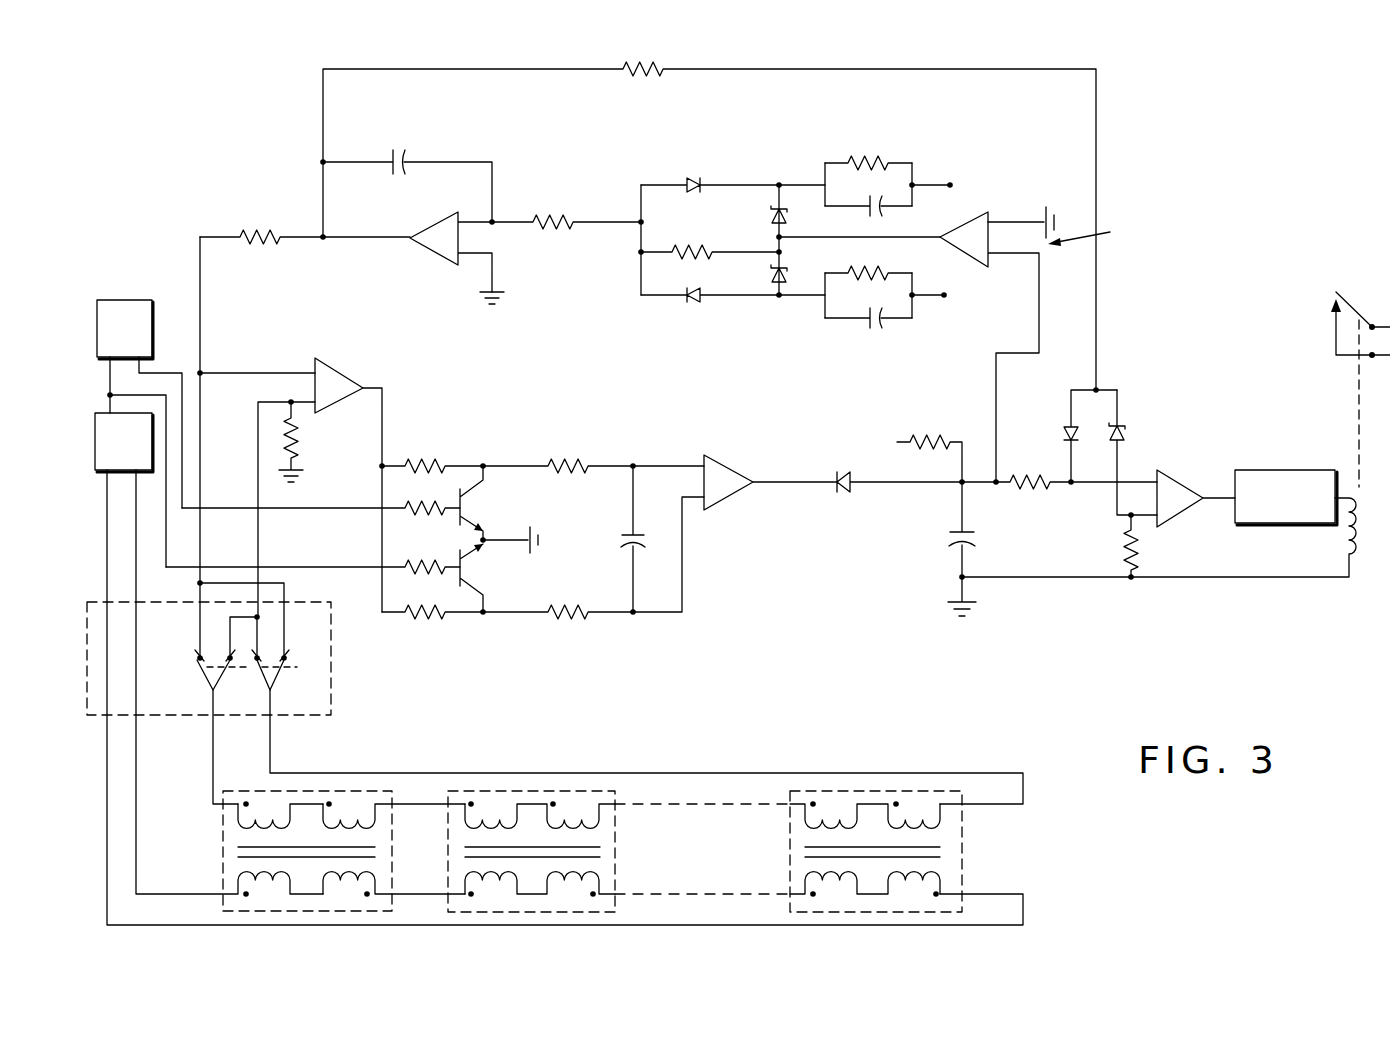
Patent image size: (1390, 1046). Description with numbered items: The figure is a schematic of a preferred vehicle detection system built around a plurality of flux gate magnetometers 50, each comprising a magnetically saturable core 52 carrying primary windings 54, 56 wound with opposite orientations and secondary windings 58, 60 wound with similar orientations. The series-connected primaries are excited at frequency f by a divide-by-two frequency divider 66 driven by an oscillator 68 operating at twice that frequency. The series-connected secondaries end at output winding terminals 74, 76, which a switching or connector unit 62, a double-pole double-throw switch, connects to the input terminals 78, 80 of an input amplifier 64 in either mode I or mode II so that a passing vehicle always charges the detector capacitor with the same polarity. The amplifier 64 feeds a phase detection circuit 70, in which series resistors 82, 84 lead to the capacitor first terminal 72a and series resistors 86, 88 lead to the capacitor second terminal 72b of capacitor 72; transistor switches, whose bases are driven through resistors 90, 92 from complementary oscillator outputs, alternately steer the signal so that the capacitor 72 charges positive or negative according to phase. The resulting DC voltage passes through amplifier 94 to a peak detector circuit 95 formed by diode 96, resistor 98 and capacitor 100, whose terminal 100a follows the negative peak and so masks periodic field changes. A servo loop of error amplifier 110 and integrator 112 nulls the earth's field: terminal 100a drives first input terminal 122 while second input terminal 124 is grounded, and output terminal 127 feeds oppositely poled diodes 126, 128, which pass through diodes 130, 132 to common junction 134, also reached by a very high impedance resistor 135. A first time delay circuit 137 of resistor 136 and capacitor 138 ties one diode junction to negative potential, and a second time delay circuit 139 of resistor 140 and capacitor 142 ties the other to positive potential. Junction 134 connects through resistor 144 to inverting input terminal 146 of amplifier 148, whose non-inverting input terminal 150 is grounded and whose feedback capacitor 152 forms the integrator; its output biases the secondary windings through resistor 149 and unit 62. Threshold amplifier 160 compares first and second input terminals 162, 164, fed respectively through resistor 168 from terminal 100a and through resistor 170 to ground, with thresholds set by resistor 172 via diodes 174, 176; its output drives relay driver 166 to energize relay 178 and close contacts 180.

The flux gate magnetometer 50 is at (976, 847).
The magnetically saturable element 52 is at (378, 852).
The primary winding 54 is at (296, 440).
The primary winding 56 is at (394, 891).
The secondary winding 58 is at (280, 811).
The secondary winding 60 is at (394, 811).
The switching or connector unit 62 is at (331, 690).
The input amplifier 64 is at (336, 406).
The divide by 2 frequency divider 66 is at (96, 472).
The oscillator 68 is at (124, 299).
The phase detection circuit 70 is at (481, 463).
The capacitor 72 is at (641, 533).
The capacitor first terminal 72a is at (637, 462).
The capacitor second terminal 72b is at (637, 617).
The output winding terminal 74 is at (215, 735).
The output winding terminal 76 is at (272, 735).
The input terminal 78 is at (247, 371).
The input terminal 80 is at (256, 420).
The resistor 82 is at (411, 476).
The resistor 84 is at (579, 461).
The resistor 86 is at (438, 623).
The resistor 88 is at (573, 623).
The resistor 90 is at (413, 519).
The resistor 92 is at (435, 562).
The amplifier 94 is at (735, 503).
The peak detector circuit 95 is at (853, 464).
The diode 96 is at (838, 496).
The resistor 98 is at (905, 452).
The capacitor 100 is at (948, 540).
The capacitor terminal 100a is at (959, 488).
The error amplifier 110 is at (941, 229).
The integrator 112 is at (383, 225).
The first input terminal 122 is at (1000, 251).
The second input terminal 124 is at (1014, 221).
The diode 126 is at (772, 216).
The output terminal 127 is at (783, 240).
The diode 128 is at (772, 276).
The diode 130 is at (699, 180).
The diode 132 is at (724, 302).
The common junction 134 is at (645, 220).
The very high impedance resistor 135 is at (722, 252).
The resistor 136 is at (889, 160).
The first time delay circuit 137 is at (838, 161).
The capacitor 138 is at (868, 212).
The second time delay circuit 139 is at (905, 324).
The resistor 140 is at (906, 270).
The capacitor 142 is at (868, 330).
The resistor 144 is at (564, 213).
The inverting input terminal 146 is at (492, 234).
The amplifier 148 is at (432, 256).
The resistor 149 is at (273, 233).
The non-inverting input terminal 150 is at (495, 280).
The feedback capacitor 152 is at (405, 149).
The threshold amplifier 160 is at (1172, 520).
The first input terminal 162 is at (1088, 487).
The second input terminal 164 is at (1124, 519).
The relay driver 166 is at (1290, 536).
The resistor 168 is at (1030, 491).
The resistor 170 is at (1134, 560).
The resistor 172 is at (658, 69).
The diode 174 is at (1067, 427).
The diode 176 is at (1122, 425).
The relay 178 is at (1352, 487).
The contacts 180 is at (1328, 299).